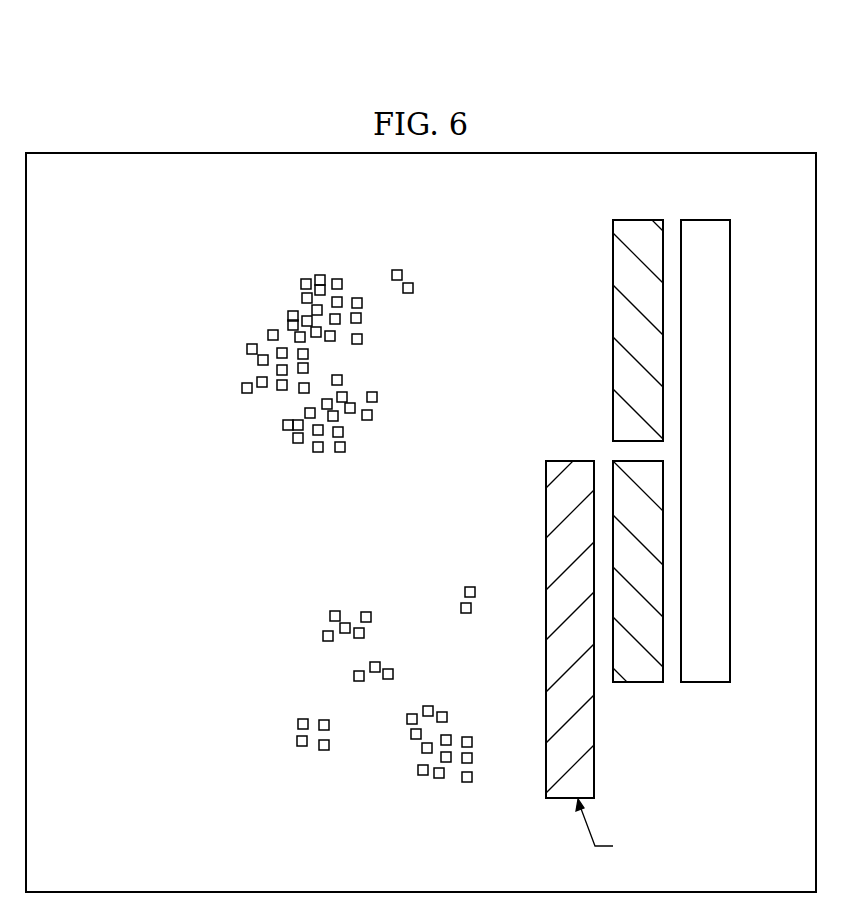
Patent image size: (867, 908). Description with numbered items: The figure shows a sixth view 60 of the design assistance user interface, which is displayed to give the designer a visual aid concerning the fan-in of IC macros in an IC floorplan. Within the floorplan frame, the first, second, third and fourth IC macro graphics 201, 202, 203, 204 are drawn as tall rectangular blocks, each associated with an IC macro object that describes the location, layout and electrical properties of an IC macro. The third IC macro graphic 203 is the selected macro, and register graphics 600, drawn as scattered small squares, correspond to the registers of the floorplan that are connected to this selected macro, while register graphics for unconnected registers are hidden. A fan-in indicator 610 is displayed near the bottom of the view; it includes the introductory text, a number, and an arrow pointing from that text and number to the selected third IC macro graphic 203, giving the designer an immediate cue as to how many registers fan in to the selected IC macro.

The sixth view 60 is at (585, 76).
The register graphics 600 is at (286, 279).
The first IC macro graphic 201 is at (640, 220).
The second IC macro graphic 202 is at (637, 682).
The third IC macro graphic 203 is at (547, 622).
The fourth IC macro graphic 204 is at (707, 220).
The fan-in indicator 610 is at (710, 829).